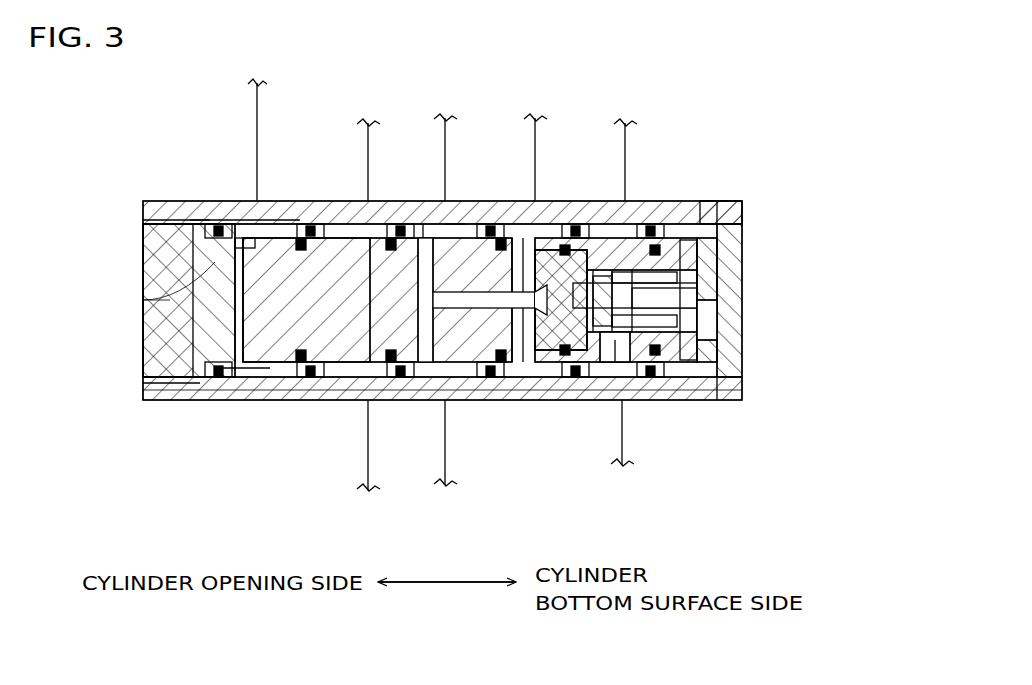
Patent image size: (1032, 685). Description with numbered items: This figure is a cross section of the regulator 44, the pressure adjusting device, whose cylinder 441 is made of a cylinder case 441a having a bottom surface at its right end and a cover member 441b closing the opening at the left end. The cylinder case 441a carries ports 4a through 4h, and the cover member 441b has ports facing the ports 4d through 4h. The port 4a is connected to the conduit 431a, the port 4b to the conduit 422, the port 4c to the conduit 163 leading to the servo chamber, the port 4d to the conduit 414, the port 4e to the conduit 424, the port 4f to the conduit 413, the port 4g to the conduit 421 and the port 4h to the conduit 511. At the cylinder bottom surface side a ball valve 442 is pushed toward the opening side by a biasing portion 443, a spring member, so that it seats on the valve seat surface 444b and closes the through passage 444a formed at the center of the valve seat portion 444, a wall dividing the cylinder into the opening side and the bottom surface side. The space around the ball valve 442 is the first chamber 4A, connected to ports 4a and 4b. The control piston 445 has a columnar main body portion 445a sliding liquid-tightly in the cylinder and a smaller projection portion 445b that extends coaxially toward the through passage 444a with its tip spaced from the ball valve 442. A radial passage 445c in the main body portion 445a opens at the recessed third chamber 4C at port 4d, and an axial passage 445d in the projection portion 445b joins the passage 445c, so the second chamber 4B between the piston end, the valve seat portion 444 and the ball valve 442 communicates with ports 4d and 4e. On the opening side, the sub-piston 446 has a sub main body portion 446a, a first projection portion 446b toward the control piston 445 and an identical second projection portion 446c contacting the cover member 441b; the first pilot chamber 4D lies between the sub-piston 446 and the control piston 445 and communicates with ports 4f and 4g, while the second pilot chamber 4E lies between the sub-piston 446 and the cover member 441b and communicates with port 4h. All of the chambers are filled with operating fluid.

The regulator 44 is at (767, 340).
The cylinder 441 is at (750, 223).
The cylinder case 441a is at (721, 203).
The cover member 441b is at (145, 243).
The ball valve 442 is at (640, 394).
The biasing portion 443 is at (752, 386).
The valve seat portion 444 is at (670, 293).
The through passage 444a is at (560, 398).
The valve seat surface 444b is at (718, 386).
The control piston 445 is at (410, 369).
The main body portion 445a is at (296, 400).
The projection portion 445b is at (543, 400).
The passage 445c is at (415, 400).
The passage 445d is at (478, 402).
The sub-piston 446 is at (187, 380).
The sub main body portion 446a is at (250, 398).
The first projection portion 446b is at (293, 398).
The second projection portion 446c is at (158, 360).
The first chamber 4A is at (745, 284).
The second chamber 4B is at (553, 201).
The third chamber 4C is at (462, 201).
The first pilot chamber 4D is at (303, 201).
The second pilot chamber 4E is at (197, 201).
The port 4a is at (641, 201).
The port 4b is at (630, 406).
The port 4c is at (518, 201).
The port 4d is at (423, 201).
The port 4e is at (455, 405).
The port 4f is at (351, 201).
The port 4g is at (348, 404).
The port 4h is at (250, 201).
The conduit 163 is at (537, 140).
The conduit 413 is at (426, 157).
The conduit 414 is at (447, 140).
The conduit 421 is at (366, 484).
The conduit 422 is at (620, 446).
The conduit 424 is at (443, 480).
The conduit 431a is at (627, 152).
The conduit 511 is at (258, 106).